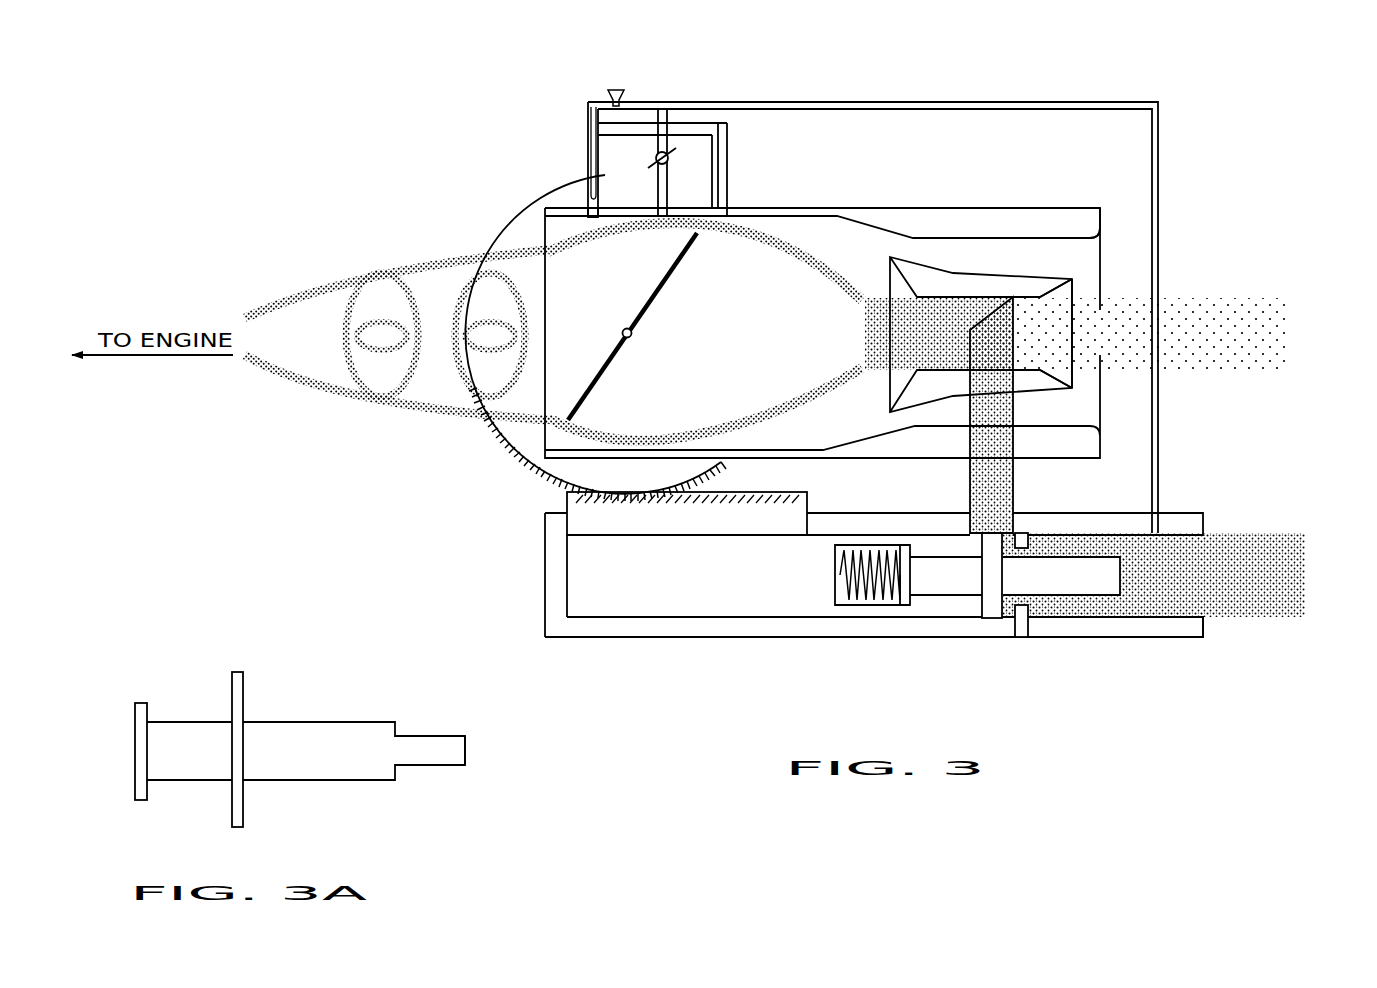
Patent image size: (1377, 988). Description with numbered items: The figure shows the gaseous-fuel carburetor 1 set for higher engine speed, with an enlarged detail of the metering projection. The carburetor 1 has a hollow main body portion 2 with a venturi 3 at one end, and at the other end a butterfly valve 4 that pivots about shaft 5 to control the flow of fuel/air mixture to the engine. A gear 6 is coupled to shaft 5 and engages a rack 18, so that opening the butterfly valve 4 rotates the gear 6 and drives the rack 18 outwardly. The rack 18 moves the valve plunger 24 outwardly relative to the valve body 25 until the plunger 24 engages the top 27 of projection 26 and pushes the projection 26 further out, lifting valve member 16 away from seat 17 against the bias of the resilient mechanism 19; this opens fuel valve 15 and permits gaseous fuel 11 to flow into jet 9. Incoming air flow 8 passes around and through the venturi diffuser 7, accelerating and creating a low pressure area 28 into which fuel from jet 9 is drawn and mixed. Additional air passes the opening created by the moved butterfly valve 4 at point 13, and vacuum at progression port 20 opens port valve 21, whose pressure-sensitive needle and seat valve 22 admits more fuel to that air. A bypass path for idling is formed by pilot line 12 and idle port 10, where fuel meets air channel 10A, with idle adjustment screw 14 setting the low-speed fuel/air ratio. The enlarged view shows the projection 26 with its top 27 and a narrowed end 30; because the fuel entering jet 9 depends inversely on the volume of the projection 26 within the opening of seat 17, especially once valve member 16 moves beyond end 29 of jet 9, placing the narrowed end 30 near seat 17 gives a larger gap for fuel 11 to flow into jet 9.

In FIG. 3, the carburetor 1 is at (1060, 158).
In FIG. 3, the hollow main body portion 2 is at (1087, 205).
In FIG. 3, the venturi 3 is at (1075, 295).
In FIG. 3, the butterfly valve 4 is at (635, 305).
In FIG. 3, the shaft 5 is at (637, 335).
In FIG. 3, the gear 6 is at (497, 432).
In FIG. 3, the venturi diffuser 7 is at (1018, 278).
In FIG. 3, the air flow 8 is at (1232, 333).
In FIG. 3, the jet 9 is at (1015, 408).
In FIG. 3, the idle port 10 is at (592, 213).
In FIG. 3, the air channel 10A is at (665, 208).
In FIG. 3, the gaseous fuel 11 is at (1227, 573).
In FIG. 3, the pilot line 12 is at (1160, 138).
In FIG. 3, the air flow opening point 13 is at (700, 238).
In FIG. 3, the idle adjustment screw 14 is at (612, 85).
In FIG. 3, the fuel valve 15 is at (1130, 640).
In FIG. 3, the valve member 16 is at (990, 620).
In FIG. 3A, the valve member 16 is at (247, 802).
In FIG. 3, the seat 17 is at (1025, 543).
In FIG. 3, the rack 18 is at (567, 500).
In FIG. 3, the resilient mechanism 19 is at (866, 600).
In FIG. 3, the progression port 20 is at (735, 177).
In FIG. 3, the port valve 21 is at (668, 147).
In FIG. 3, the needle and seat valve 22 is at (648, 144).
In FIG. 3, the valve plunger 24 is at (748, 590).
In FIG. 3, the valve body 25 is at (752, 638).
In FIG. 3, the projection 26 is at (1090, 578).
In FIG. 3A, the projection 26 is at (343, 720).
In FIG. 3, the top of projection 27 is at (906, 607).
In FIG. 3A, the top of projection 27 is at (135, 753).
In FIG. 3, the low pressure area 28 is at (944, 343).
In FIG. 3, the end of jet 29 is at (990, 530).
In FIG. 3A, the end of projection 30 is at (467, 746).